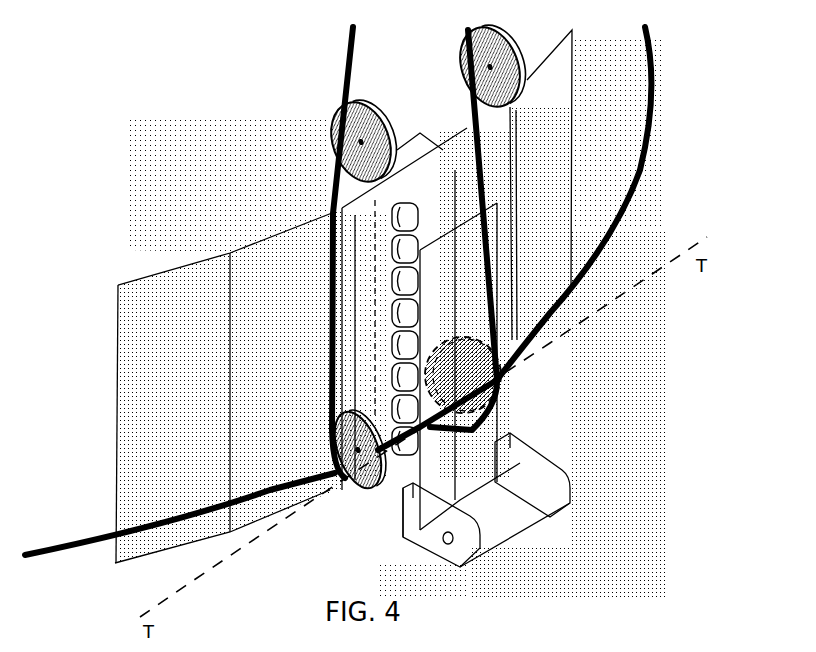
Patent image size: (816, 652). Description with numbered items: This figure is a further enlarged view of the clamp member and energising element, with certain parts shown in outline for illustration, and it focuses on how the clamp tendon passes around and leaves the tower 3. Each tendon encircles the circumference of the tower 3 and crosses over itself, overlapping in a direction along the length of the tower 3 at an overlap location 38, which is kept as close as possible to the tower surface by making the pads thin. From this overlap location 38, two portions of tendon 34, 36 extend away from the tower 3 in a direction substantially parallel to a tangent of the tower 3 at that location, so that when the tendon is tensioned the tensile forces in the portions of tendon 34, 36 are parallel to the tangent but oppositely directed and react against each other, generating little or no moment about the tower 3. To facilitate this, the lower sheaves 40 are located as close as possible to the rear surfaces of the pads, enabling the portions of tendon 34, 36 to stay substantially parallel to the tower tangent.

The tower 3 is at (121, 152).
The portion of tendon 34 is at (372, 468).
The portion of tendon 36 is at (497, 436).
The overlap location 38 is at (430, 445).
The lower sheaves 40 is at (482, 350).